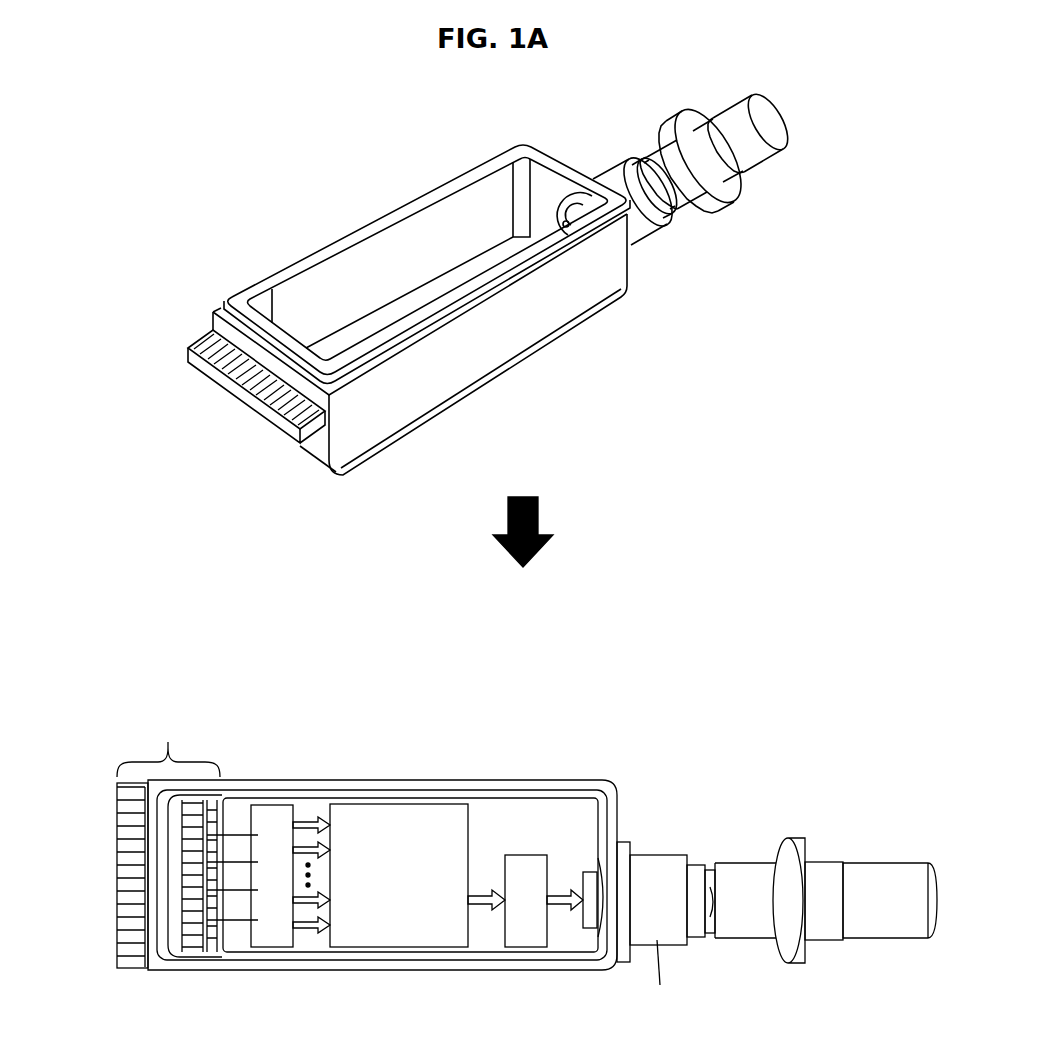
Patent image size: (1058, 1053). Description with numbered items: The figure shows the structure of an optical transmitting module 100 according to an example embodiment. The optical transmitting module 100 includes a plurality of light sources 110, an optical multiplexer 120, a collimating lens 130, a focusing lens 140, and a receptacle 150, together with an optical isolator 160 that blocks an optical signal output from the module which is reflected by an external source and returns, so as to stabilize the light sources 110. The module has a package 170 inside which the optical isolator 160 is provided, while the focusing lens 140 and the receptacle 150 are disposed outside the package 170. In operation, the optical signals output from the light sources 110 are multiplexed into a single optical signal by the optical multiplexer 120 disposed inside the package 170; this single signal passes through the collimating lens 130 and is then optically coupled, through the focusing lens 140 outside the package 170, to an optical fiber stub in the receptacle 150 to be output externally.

The optical transmitting module 100 is at (543, 658).
The light sources 110 is at (272, 943).
The optical multiplexer 120 is at (399, 940).
The collimating lens 130 is at (527, 940).
The focusing lens 140 is at (697, 875).
The receptacle 150 is at (830, 875).
The optical isolator 160 is at (588, 925).
The package 170 is at (388, 785).